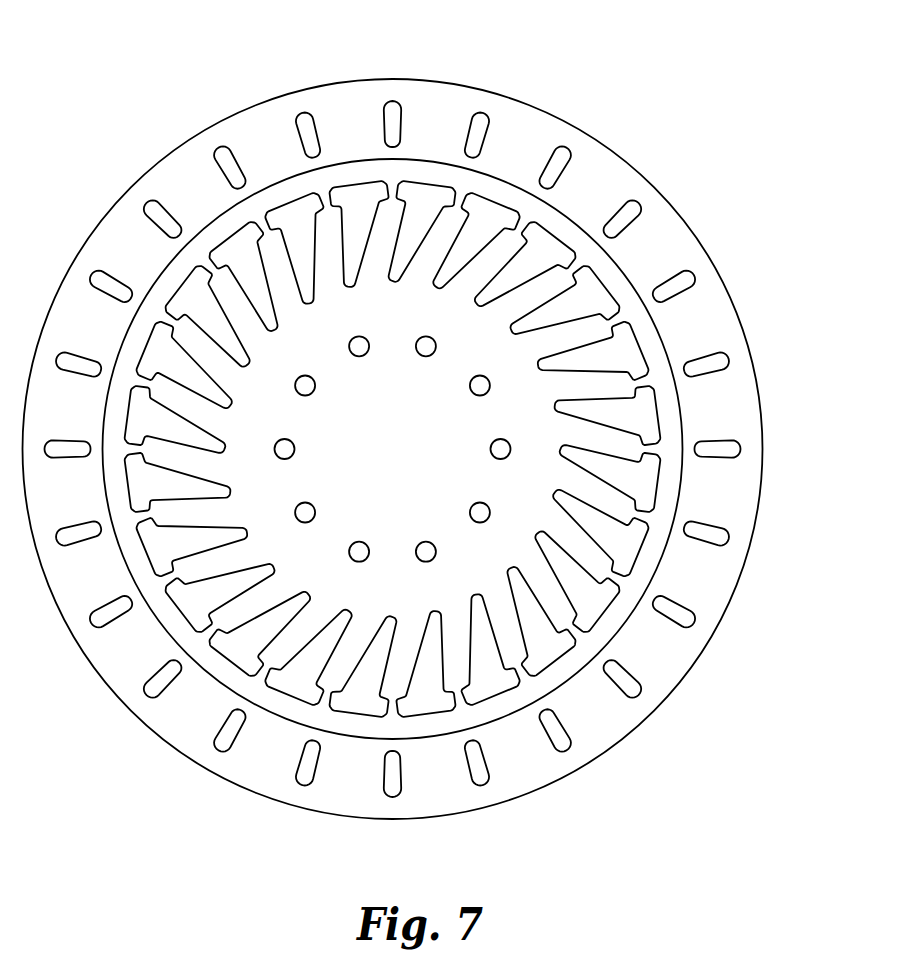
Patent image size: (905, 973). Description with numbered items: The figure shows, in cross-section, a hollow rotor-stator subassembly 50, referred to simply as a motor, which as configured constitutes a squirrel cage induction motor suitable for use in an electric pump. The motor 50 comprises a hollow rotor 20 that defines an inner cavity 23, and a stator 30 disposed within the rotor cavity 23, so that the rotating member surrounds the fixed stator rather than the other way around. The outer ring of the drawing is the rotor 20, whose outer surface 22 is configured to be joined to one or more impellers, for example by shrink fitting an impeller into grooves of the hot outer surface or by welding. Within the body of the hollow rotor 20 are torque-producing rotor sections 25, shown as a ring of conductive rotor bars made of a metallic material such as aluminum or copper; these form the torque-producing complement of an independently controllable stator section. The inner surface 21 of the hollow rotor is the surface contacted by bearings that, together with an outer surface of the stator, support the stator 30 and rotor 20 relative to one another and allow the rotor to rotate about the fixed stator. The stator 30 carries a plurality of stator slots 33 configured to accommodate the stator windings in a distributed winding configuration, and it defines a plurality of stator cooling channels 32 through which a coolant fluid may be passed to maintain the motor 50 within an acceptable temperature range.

The hollow rotor-stator subassembly 50 is at (90, 89).
The hollow rotor 20 is at (528, 158).
The outer surface 22 is at (695, 233).
The torque-producing rotor section 25 is at (640, 203).
The stator 30 is at (383, 436).
The inner surface 21 is at (620, 613).
The inner cavity 23 is at (652, 560).
The stator slots 33 is at (628, 387).
The stator cooling channels 32 is at (492, 452).